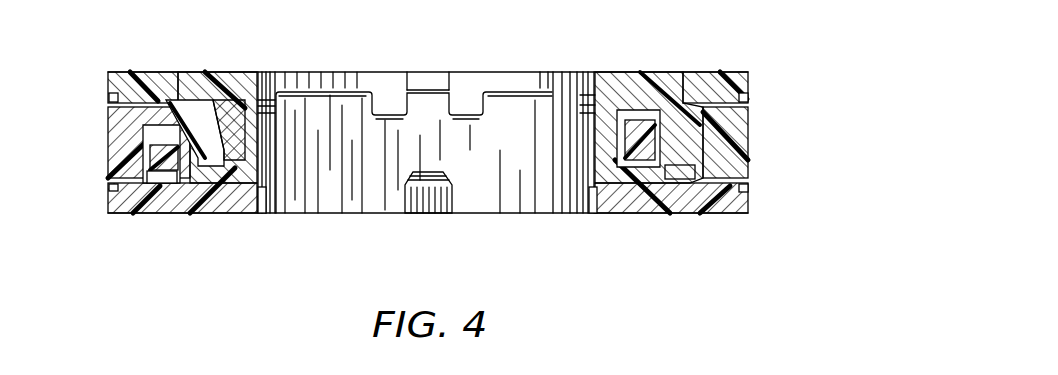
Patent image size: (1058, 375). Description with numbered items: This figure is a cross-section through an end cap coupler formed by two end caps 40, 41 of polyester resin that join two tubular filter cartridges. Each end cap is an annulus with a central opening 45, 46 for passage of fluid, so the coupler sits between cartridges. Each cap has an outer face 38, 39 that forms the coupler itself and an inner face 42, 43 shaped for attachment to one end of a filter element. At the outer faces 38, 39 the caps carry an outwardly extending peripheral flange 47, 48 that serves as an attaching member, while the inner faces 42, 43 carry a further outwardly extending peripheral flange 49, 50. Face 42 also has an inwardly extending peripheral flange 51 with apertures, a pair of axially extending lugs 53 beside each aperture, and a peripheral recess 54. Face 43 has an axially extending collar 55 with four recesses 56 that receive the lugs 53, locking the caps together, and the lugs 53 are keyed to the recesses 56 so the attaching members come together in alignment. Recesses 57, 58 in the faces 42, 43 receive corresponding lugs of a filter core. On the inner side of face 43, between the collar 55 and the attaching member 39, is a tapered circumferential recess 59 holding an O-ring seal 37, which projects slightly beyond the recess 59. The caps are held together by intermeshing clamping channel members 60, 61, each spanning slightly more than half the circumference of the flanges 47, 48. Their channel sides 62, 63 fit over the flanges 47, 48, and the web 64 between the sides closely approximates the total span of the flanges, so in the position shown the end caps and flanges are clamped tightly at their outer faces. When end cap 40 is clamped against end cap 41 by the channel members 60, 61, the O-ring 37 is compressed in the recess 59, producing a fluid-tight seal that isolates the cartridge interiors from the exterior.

The O-ring seal 37 is at (257, 147).
The outer face of end cap 38 is at (193, 73).
The outer face of end cap 39 is at (242, 216).
The end cap 40 is at (712, 66).
The end cap 41 is at (211, 218).
The inner face of end cap 42 is at (507, 97).
The inner face of end cap 43 is at (333, 95).
The central opening 45 is at (555, 81).
The central opening 46 is at (357, 197).
The outwardly extending peripheral flange 47 is at (152, 133).
The outwardly extending peripheral flange 48 is at (155, 157).
The outwardly extending peripheral flange 49 is at (108, 80).
The outwardly extending peripheral flange 50 is at (110, 207).
The inwardly extending peripheral flange 51 is at (254, 84).
The axially extending lugs 53 is at (397, 100).
The peripheral recess 54 is at (600, 87).
The axially extending collar 55 is at (370, 103).
The recesses 56 is at (472, 122).
The recess 57 is at (263, 88).
The recess 58 is at (433, 200).
The circumferential recess 59 is at (220, 107).
The clamping channel member 60 is at (104, 169).
The clamping channel member 61 is at (755, 117).
The channel side 62 is at (172, 105).
The channel side 63 is at (168, 170).
The web 64 is at (108, 142).